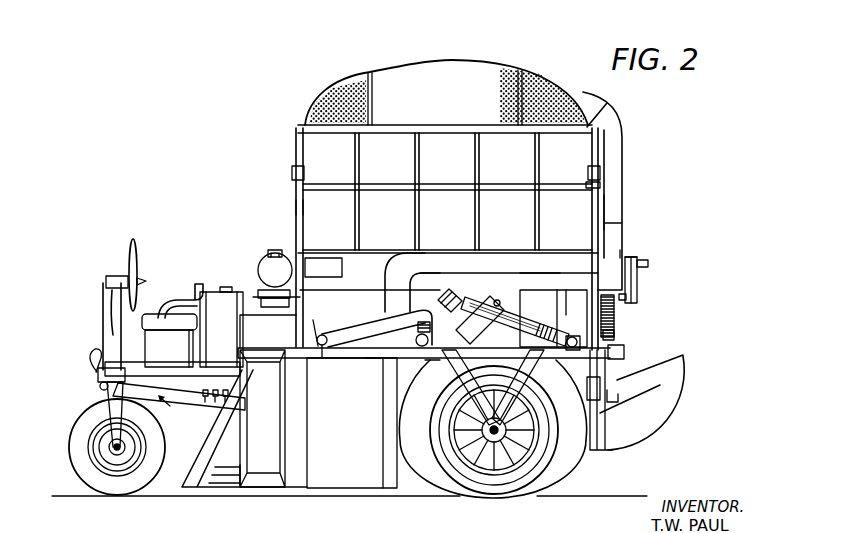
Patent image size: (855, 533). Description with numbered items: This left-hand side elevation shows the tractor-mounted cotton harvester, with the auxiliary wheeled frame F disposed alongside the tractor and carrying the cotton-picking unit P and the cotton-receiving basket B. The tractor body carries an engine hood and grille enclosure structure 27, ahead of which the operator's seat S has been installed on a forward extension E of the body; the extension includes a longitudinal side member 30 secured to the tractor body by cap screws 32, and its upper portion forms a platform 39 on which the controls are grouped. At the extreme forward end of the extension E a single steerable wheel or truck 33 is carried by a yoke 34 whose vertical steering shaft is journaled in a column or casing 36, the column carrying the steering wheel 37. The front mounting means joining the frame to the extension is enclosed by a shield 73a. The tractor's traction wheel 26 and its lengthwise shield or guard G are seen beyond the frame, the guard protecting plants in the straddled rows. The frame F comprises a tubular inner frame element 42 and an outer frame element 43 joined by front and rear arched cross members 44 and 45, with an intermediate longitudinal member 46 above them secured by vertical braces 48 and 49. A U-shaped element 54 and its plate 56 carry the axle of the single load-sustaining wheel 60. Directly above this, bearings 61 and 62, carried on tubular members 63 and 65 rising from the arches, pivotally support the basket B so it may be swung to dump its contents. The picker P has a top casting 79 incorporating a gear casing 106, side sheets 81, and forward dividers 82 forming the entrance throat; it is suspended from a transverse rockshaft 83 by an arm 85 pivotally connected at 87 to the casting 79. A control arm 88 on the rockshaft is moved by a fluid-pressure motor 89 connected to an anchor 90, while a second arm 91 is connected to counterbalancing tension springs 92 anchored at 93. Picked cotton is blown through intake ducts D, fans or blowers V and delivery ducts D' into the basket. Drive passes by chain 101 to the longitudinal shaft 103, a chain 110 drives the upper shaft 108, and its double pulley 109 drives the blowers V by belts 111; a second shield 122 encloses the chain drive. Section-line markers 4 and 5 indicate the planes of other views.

The basket B is at (497, 64).
The delivery ducts D' is at (624, 191).
The bearing 61 is at (292, 176).
The bearing 62 is at (602, 188).
The vertical tubular member 63 is at (296, 210).
The tubular member 65 is at (604, 213).
The fans or blowers V is at (620, 252).
The belts 111 is at (625, 258).
The gear casing 106 is at (342, 258).
The vertical brace 48 is at (418, 283).
The second arm 91 is at (432, 303).
The intake ducts D is at (368, 278).
The intermediate longitudinal member 46 is at (535, 289).
The vertical brace 49 is at (557, 298).
The longitudinally extending shaft 103 is at (577, 302).
The tension springs 92 is at (462, 300).
The control arm 88 is at (428, 338).
The arm 85 is at (346, 330).
The top casting 79 is at (312, 328).
The pivotal connection 87 is at (322, 362).
The auxiliary wheeled frame F is at (358, 364).
The outer frame element 43 is at (372, 360).
The side sheets 81 is at (323, 440).
The transverse rockshaft 83 is at (432, 362).
The traction wheel 26 is at (408, 458).
The U-shaped element 54 is at (462, 415).
The single wheel 60 is at (490, 495).
The plate 56 is at (518, 430).
The anchor 90 is at (516, 378).
The fluid-pressure motor 89 is at (478, 345).
The anchor 93 is at (571, 350).
The inner frame element 42 is at (163, 362).
The longitudinal side member 30 is at (153, 388).
The forward extension E is at (169, 410).
The cap screws 32 is at (225, 400).
The column 36 is at (103, 318).
The steering wheel 37 is at (134, 245).
The platform 39 is at (88, 355).
The shield 73a is at (100, 383).
The yoke 34 is at (110, 410).
The steerable wheel or truck 33 is at (70, 443).
The operator's seat S is at (169, 294).
The engine hood and grille enclosure structure 27 is at (213, 292).
The front arched cross member 44 is at (292, 337).
The dividers 82 is at (211, 488).
The cotton-picking unit P is at (326, 490).
The section line 5 is at (613, 277).
The section line 4 is at (52, 290).
The longitudinal shaft 108 is at (637, 282).
The double pulley 109 is at (627, 298).
The chain 110 is at (616, 315).
The chain 101 is at (616, 336).
The rear arched cross member 45 is at (622, 357).
The shields or guards G is at (655, 378).
The second shield 122 is at (618, 398).